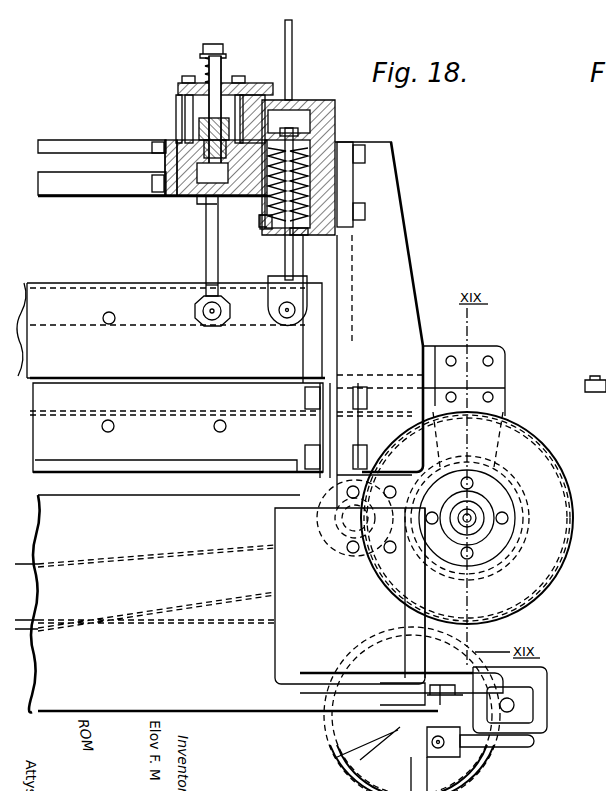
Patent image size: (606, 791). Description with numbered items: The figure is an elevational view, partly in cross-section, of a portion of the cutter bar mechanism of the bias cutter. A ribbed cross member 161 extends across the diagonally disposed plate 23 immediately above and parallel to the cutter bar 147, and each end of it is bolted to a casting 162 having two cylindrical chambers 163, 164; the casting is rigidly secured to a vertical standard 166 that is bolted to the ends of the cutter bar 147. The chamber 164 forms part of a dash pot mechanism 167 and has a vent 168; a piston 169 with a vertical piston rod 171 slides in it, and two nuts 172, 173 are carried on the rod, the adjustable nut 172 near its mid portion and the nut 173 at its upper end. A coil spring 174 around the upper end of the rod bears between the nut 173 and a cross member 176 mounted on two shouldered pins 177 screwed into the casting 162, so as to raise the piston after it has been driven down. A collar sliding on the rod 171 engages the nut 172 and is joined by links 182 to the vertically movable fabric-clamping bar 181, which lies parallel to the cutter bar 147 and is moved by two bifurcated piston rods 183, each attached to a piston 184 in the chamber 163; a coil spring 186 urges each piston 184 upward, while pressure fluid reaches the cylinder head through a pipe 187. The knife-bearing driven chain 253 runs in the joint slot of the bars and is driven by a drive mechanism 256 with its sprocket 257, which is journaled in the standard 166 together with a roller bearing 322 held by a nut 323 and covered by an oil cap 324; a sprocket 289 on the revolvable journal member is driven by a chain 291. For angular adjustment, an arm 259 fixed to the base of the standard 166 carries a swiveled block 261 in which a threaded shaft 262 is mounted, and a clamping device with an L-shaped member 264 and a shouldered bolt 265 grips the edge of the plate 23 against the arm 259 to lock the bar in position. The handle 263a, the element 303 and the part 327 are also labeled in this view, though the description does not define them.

The plate 23 is at (224, 700).
The cutter bar 147 is at (228, 462).
The ribbed cross member 161 is at (68, 144).
The casting 162 is at (322, 142).
The cylindrical chamber 163 is at (300, 100).
The cylindrical chamber 164 is at (197, 168).
The standard 166 is at (398, 246).
The dash pot mechanism 167 is at (199, 132).
The vent 168 is at (232, 196).
The piston 169 is at (197, 200).
The piston rod 171 is at (209, 118).
The nut 172 is at (165, 142).
The nut 173 is at (213, 44).
The coil spring 174 is at (205, 68).
The cross member 176 is at (182, 88).
The shouldered pins 177 is at (240, 76).
The fabric-clamping bar 181 is at (108, 286).
The links 182 is at (204, 245).
The bifurcated piston rods 183 is at (268, 302).
The piston 184 is at (318, 128).
The coil spring 186 is at (345, 181).
The pipe 187 is at (292, 47).
The driven chain 253 is at (350, 459).
The drive mechanism 256 is at (568, 460).
The sprocket 257 is at (568, 513).
The arm 259 is at (520, 673).
The swiveled block 261 is at (520, 692).
The threaded shaft 262 is at (514, 707).
The lever arm 263a is at (520, 747).
The L-shaped member 264 is at (400, 727).
The shouldered bolt 265 is at (441, 685).
The sprocket 289 is at (505, 492).
The chain 291 is at (282, 595).
The pin 303 is at (596, 681).
The roller bearing 322 is at (605, 408).
The nut 323 is at (605, 393).
The oil cap 324 is at (592, 344).
The latch block 327 is at (590, 378).